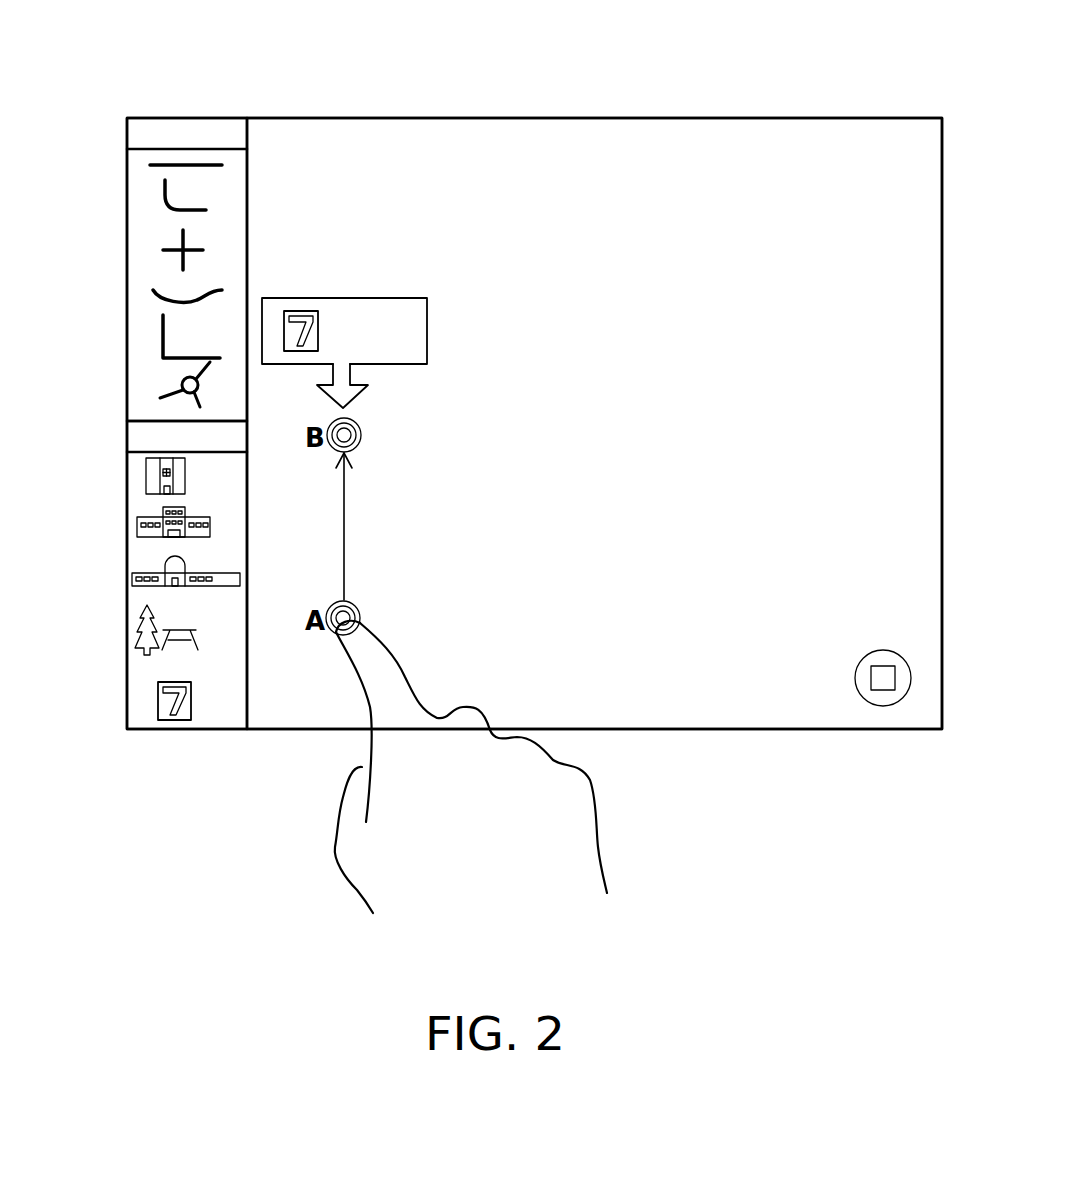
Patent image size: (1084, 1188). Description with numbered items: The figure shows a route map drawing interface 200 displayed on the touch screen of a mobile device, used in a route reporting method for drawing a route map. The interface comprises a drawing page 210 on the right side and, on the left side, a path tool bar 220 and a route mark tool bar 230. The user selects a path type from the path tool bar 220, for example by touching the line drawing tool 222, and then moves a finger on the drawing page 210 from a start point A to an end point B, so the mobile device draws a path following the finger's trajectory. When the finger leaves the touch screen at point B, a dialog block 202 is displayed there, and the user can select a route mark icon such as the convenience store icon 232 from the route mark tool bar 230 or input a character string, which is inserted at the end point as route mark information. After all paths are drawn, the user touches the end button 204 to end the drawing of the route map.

The route map drawing interface 200 is at (773, 730).
The dialog block 202 is at (343, 298).
The end button 204 is at (884, 697).
The drawing page 210 is at (677, 181).
The path tool bar 220 is at (213, 190).
The line drawing tool 222 is at (146, 173).
The route mark tool bar 230 is at (215, 667).
The 7-11 icon 232 is at (174, 720).